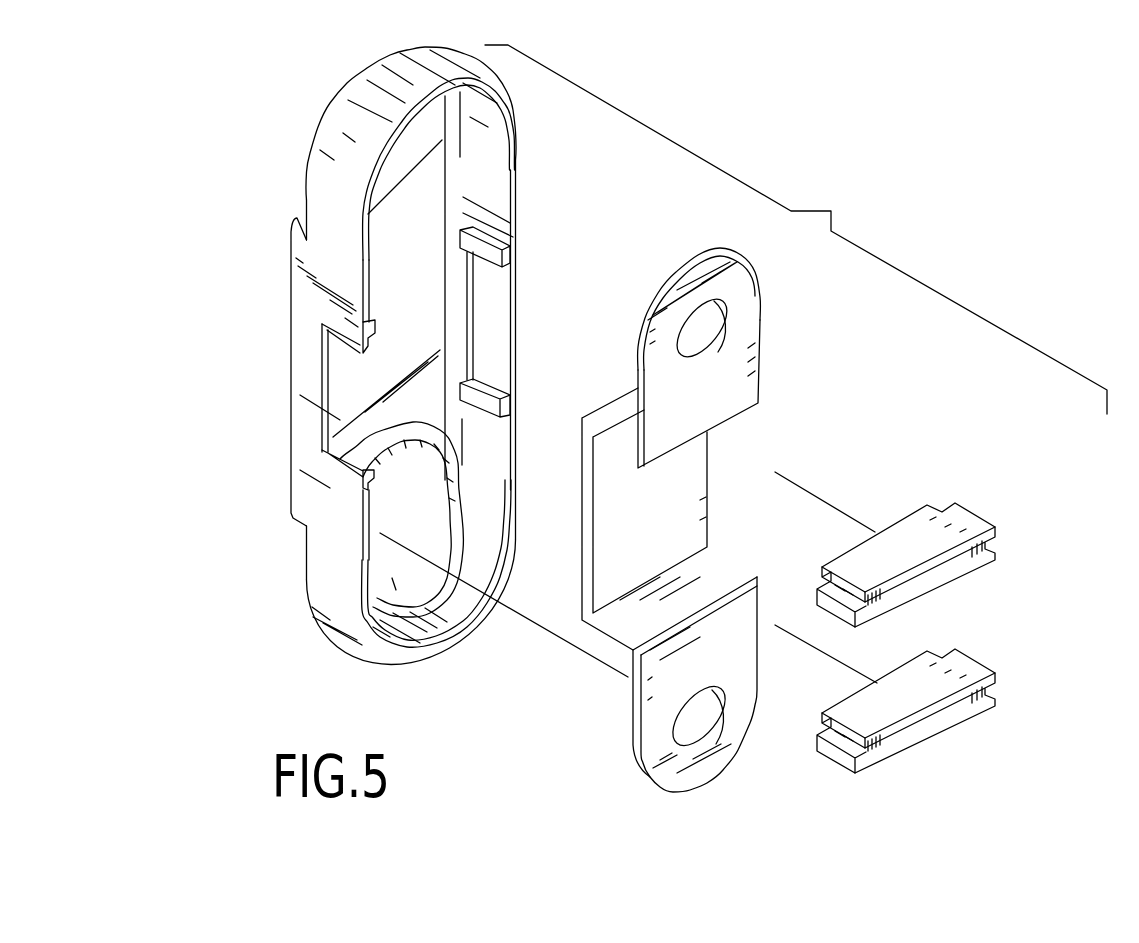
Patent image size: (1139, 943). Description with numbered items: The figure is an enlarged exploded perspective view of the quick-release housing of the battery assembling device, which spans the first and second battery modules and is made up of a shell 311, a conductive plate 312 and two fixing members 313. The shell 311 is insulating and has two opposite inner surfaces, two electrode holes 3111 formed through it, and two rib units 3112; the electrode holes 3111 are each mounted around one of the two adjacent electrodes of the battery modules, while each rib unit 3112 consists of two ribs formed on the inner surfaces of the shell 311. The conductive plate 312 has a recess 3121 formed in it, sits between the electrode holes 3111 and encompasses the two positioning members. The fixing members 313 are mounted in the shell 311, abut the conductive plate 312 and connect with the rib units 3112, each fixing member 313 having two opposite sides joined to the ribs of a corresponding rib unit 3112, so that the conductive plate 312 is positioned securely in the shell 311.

The shell 311 is at (406, 378).
The electrode hole 3111 is at (396, 591).
The rib unit 3112 is at (488, 246).
The conductive plate 312 is at (659, 520).
The recess 3121 is at (698, 513).
The fixing member 313 is at (962, 565).